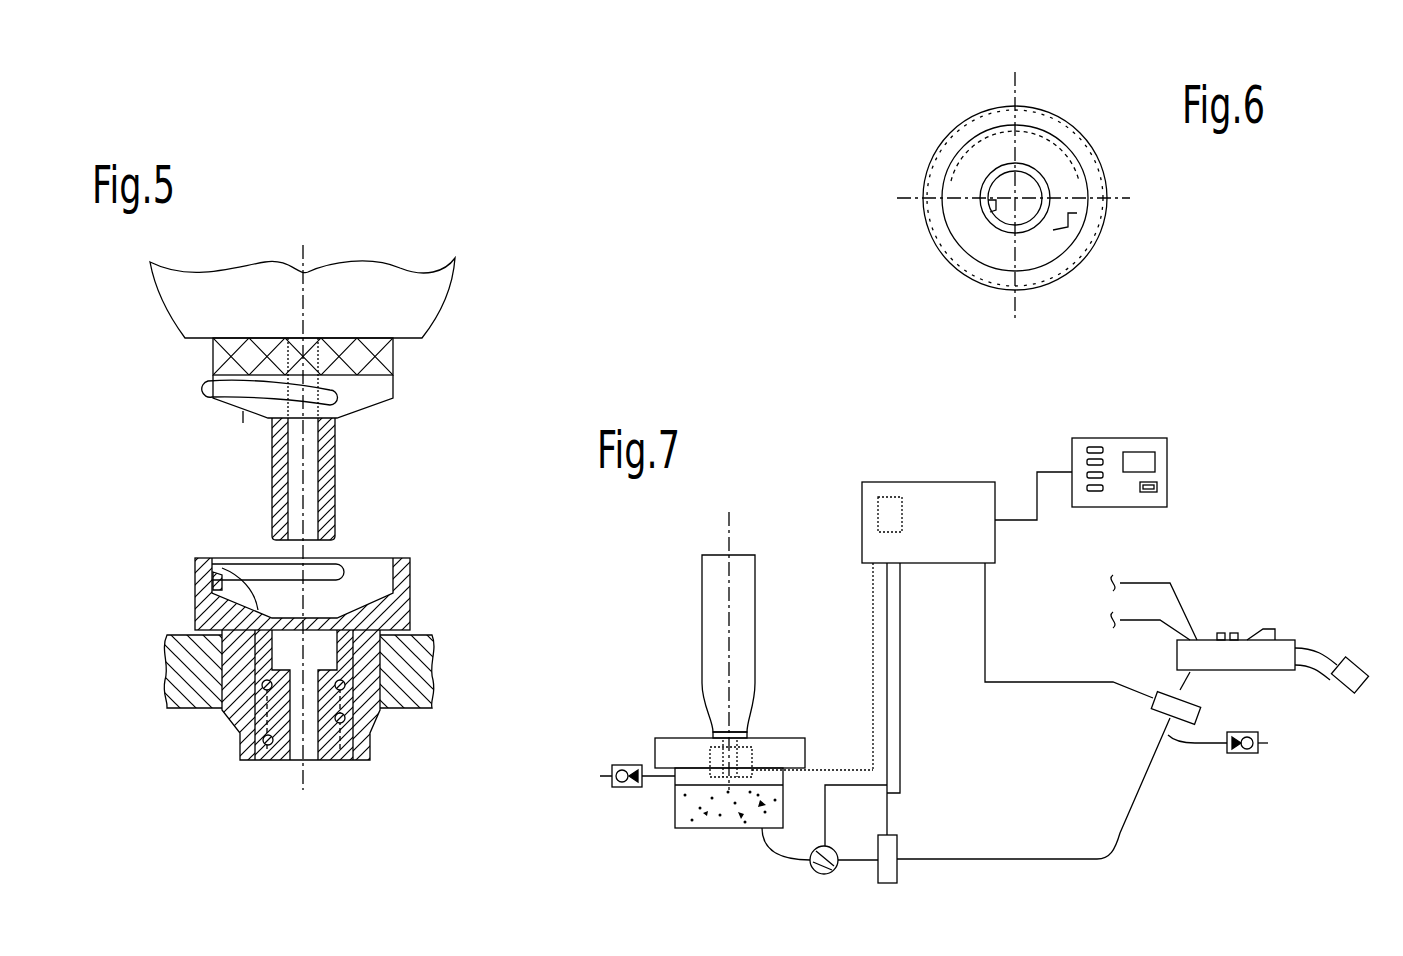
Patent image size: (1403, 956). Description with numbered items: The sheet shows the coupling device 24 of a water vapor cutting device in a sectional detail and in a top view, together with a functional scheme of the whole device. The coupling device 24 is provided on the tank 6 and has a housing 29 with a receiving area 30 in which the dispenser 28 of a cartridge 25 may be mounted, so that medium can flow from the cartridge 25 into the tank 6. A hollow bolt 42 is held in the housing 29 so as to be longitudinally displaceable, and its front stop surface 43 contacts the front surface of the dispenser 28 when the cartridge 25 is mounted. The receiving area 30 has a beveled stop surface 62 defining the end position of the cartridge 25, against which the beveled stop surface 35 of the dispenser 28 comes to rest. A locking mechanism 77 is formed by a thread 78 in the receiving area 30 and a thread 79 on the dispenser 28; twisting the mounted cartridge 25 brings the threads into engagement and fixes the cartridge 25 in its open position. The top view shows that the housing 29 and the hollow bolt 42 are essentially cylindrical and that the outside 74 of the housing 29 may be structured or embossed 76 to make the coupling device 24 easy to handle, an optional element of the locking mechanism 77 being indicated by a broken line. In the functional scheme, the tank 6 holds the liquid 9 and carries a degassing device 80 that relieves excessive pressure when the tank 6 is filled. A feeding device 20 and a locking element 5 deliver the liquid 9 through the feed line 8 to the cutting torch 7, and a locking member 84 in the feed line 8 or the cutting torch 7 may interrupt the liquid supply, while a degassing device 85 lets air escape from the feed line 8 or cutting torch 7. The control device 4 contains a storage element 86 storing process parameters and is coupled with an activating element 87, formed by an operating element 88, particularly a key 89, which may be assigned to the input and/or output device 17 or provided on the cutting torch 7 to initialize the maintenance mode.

In FIG. 7, the control device 4 is at (873, 552).
In FIG. 7, the locking element 5 is at (890, 850).
In FIG. 7, the tank 6 is at (653, 815).
In FIG. 7, the cutting torch 7 is at (1267, 612).
In FIG. 7, the feed line 8 is at (1014, 856).
In FIG. 7, the liquid 9 is at (700, 812).
In FIG. 7, the input and/or output device 17 is at (1180, 457).
In FIG. 7, the feeding device 20 is at (818, 865).
In FIG. 5, the coupling device 24 is at (185, 522).
In FIG. 6, the coupling device 24 is at (1123, 257).
In FIG. 5, the cartridge 25 is at (480, 342).
In FIG. 7, the cartridge 25 is at (751, 522).
In FIG. 5, the dispenser 28 is at (367, 448).
In FIG. 5, the housing 29 is at (236, 763).
In FIG. 5, the receiving area 30 is at (383, 582).
In FIG. 5, the stop surface 35 is at (241, 415).
In FIG. 5, the hollow bolt 42 is at (283, 768).
In FIG. 6, the hollow bolt 42 is at (1005, 227).
In FIG. 6, the front stop surface 43 is at (992, 205).
In FIG. 5, the stop surface 62 is at (214, 575).
In FIG. 6, the stop surface 62 is at (1077, 213).
In FIG. 6, the outside 74 is at (940, 148).
In FIG. 6, the embossing 76 is at (1043, 107).
In FIG. 5, the locking mechanism 77 is at (362, 570).
In FIG. 6, the locking mechanism 77 is at (1088, 170).
In FIG. 5, the thread 78 is at (345, 566).
In FIG. 5, the thread 79 is at (207, 385).
In FIG. 7, the degassing device 80 is at (625, 765).
In FIG. 7, the locking member 84 is at (1193, 712).
In FIG. 7, the degassing device 85 is at (1244, 753).
In FIG. 7, the storage element 86 is at (891, 508).
In FIG. 7, the activating element 87 is at (745, 752).
In FIG. 7, the operating element 88 is at (1170, 485).
In FIG. 7, the key 89 is at (1148, 492).